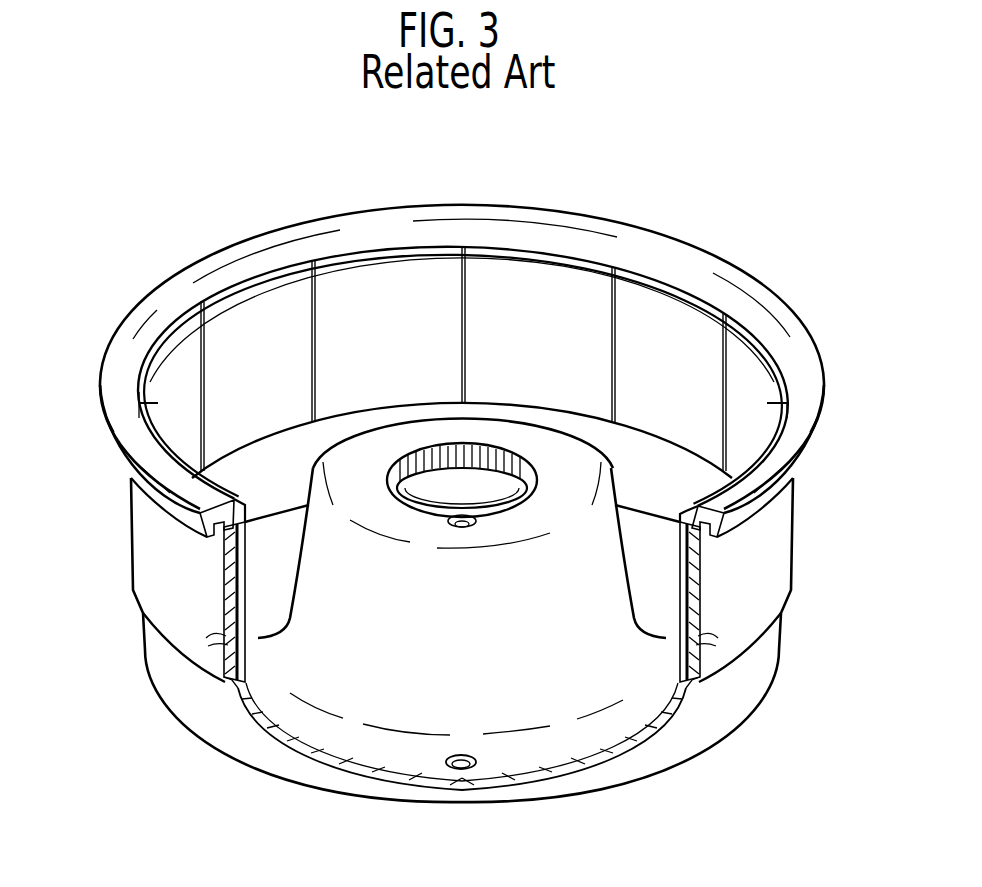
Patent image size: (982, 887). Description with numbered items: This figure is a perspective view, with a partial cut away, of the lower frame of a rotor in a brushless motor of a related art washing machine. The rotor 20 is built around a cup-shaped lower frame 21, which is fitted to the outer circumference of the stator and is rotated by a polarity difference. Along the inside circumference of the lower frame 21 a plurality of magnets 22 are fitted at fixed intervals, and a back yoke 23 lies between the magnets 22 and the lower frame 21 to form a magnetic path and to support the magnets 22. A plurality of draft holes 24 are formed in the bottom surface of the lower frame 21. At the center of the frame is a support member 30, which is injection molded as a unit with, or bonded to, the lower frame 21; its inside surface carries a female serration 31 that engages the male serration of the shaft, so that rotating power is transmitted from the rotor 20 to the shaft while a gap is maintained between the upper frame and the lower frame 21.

The rotor 20 is at (663, 214).
The lower frame 21 is at (776, 550).
The magnets 22 is at (531, 286).
The back yoke 23 is at (379, 248).
The draft holes 24 is at (462, 773).
The support member 30 is at (548, 420).
The female serration 31 is at (385, 470).